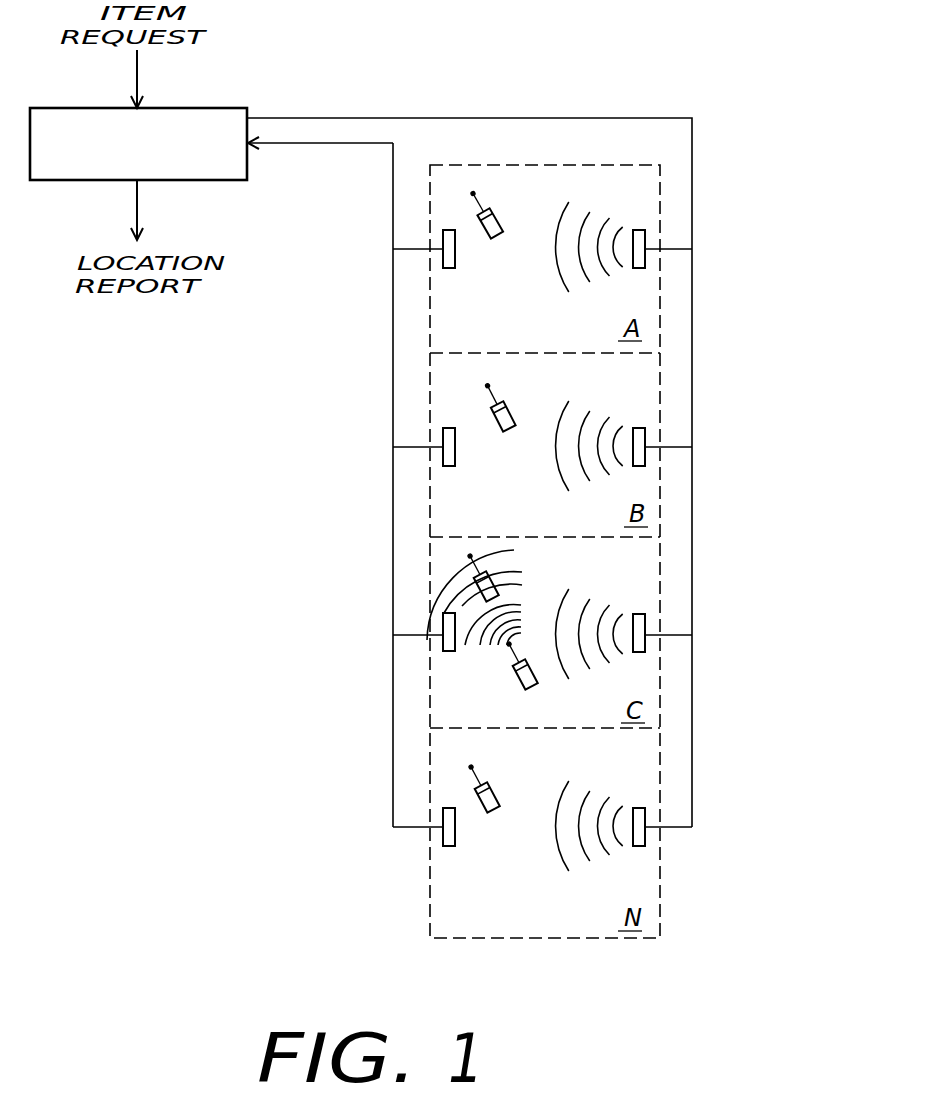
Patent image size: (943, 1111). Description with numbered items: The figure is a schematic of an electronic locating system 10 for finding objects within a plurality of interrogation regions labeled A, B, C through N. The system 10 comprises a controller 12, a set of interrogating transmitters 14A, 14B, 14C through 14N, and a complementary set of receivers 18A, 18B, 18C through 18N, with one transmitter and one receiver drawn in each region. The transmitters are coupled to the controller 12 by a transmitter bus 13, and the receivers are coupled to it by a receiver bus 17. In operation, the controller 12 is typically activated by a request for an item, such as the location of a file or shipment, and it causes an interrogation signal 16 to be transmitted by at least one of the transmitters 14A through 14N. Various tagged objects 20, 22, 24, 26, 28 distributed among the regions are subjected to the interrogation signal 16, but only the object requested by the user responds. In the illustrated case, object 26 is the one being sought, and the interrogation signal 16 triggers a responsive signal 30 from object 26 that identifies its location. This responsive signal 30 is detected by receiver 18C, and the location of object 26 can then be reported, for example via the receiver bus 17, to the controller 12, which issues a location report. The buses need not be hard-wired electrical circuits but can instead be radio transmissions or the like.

The system 10 is at (655, 92).
The controller 12 is at (190, 108).
The transmitter bus 13 is at (692, 312).
The interrogating transmitter 14A is at (648, 242).
The interrogating transmitter 14B is at (648, 440).
The interrogating transmitter 14C is at (648, 628).
The interrogating transmitter 14N is at (648, 838).
The interrogation signal 16 is at (601, 223).
The receiver bus 17 is at (393, 352).
The receiver 18A is at (455, 258).
The receiver 18B is at (455, 455).
The receiver 18C is at (452, 652).
The receiver 18N is at (455, 838).
The tagged object 20 is at (497, 219).
The tagged object 22 is at (513, 410).
The tagged object 24 is at (497, 583).
The tagged object 26 is at (533, 689).
The tagged object 28 is at (498, 791).
The responsive signal 30 is at (466, 598).